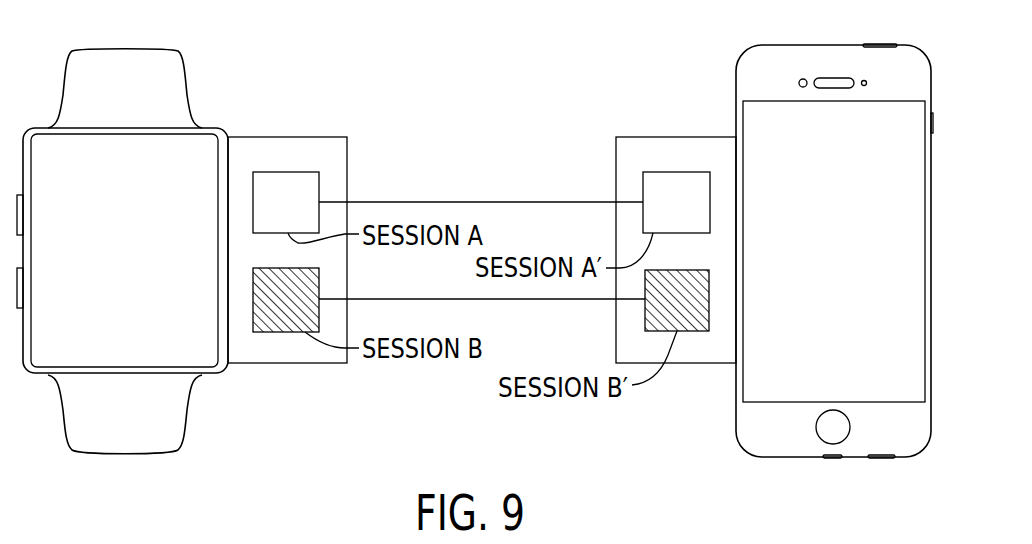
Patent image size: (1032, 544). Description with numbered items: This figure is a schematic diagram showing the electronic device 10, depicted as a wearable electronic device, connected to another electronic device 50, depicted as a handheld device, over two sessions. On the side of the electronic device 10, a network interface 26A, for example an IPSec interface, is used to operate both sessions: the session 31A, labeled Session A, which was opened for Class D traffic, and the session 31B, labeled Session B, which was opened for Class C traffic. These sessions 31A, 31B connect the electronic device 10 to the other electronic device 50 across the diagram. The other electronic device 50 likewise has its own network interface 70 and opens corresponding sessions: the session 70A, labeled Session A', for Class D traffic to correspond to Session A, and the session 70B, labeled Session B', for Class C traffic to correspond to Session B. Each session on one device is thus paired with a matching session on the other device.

The electronic device 10 is at (125, 45).
The network interface 26A is at (317, 78).
The session 31A is at (319, 173).
The session 31B is at (288, 332).
The other electronic device 50 is at (836, 45).
The network interface of mobile phone 70 is at (692, 78).
The session 70A is at (650, 172).
The session 70B is at (692, 331).